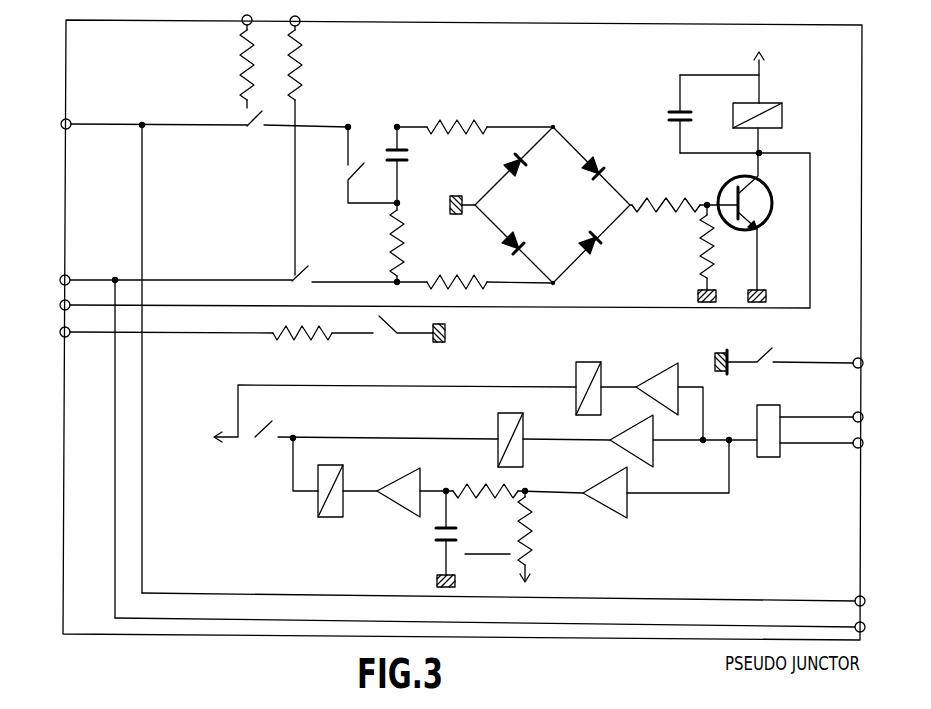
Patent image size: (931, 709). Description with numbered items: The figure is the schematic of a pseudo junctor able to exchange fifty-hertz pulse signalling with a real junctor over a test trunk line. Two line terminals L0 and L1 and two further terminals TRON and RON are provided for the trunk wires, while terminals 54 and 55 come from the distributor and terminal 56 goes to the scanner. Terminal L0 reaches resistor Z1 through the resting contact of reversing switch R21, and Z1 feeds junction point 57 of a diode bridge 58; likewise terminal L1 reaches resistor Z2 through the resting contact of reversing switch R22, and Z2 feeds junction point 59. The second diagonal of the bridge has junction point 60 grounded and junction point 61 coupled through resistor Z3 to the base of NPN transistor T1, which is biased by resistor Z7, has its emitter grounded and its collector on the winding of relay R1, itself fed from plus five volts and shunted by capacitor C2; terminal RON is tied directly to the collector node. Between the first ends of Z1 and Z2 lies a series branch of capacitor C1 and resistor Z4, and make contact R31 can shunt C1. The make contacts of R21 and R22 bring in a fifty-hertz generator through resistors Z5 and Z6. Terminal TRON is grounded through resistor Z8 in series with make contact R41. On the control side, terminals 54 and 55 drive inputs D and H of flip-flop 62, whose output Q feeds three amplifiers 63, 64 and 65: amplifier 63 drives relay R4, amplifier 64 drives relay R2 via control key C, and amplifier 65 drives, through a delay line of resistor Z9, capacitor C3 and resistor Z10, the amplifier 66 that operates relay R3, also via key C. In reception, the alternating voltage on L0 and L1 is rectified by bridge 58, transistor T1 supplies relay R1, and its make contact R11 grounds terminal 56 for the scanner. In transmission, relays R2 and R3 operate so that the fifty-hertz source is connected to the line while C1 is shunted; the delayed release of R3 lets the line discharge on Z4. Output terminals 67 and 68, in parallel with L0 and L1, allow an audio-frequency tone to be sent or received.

The terminal L0 is at (154, 340).
The terminal L1 is at (176, 431).
The terminal RON is at (166, 322).
The terminal TRON is at (90, 353).
The resistor Z5 is at (230, 78).
The resistor Z6 is at (309, 70).
The reversing switch R2.1 R21 is at (250, 124).
The reversing switch R2.2 R22 is at (290, 278).
The make contact R3.1 R31 is at (336, 186).
The capacitor C1 is at (410, 160).
The resistor Z4 is at (382, 247).
The resistor Z1 is at (460, 118).
The resistor Z2 is at (462, 272).
The diode bridge rectifier 58 is at (554, 218).
The junction point 57 is at (568, 114).
The junction point 59 is at (556, 284).
The junction point 60 is at (480, 192).
The junction point 61 is at (626, 208).
The resistor Z3 is at (672, 186).
The resistor Z7 is at (701, 265).
The transistor T1 is at (762, 200).
The relay R1 is at (795, 100).
The capacitor C2 is at (677, 110).
The resistor Z8 is at (328, 338).
The make contact R4.1 R41 is at (384, 330).
The control key C is at (274, 442).
The relay R3 is at (344, 478).
The amplifier 66 is at (430, 468).
The resistor Z9 is at (476, 470).
The capacitor C3 is at (437, 544).
The resistor Z10 is at (530, 548).
The amplifier 65 is at (597, 470).
The relay R2 is at (497, 408).
The amplifier 64 is at (628, 422).
The relay R4 is at (587, 350).
The amplifier 63 is at (667, 360).
The flip-flop 62 is at (780, 458).
The make contact R1.1 R11 is at (781, 340).
The terminal 56 is at (851, 361).
The terminal 54 is at (851, 412).
The terminal 55 is at (854, 449).
The output terminal 67 is at (854, 596).
The output terminal 68 is at (854, 623).